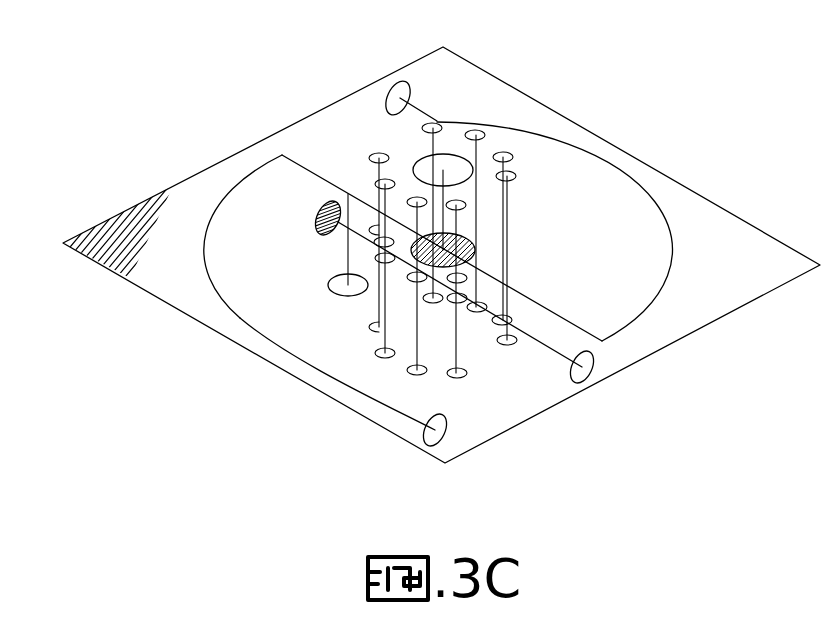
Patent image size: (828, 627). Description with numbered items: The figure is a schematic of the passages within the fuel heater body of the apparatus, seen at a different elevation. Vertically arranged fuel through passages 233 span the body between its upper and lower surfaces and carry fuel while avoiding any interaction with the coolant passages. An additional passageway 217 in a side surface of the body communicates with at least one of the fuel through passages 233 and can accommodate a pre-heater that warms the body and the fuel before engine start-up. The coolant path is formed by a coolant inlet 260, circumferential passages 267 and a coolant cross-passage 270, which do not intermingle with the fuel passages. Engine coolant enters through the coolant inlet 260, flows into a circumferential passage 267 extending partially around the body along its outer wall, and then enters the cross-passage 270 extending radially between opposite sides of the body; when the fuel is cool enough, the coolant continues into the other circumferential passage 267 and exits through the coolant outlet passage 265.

The passageway 217 is at (592, 373).
The fuel through passages 233 is at (513, 157).
The coolant inlet 260 is at (388, 87).
The coolant outlet passage 265 is at (447, 433).
The circumferential passages 267 is at (650, 186).
The coolant cross-passage 270 is at (588, 334).